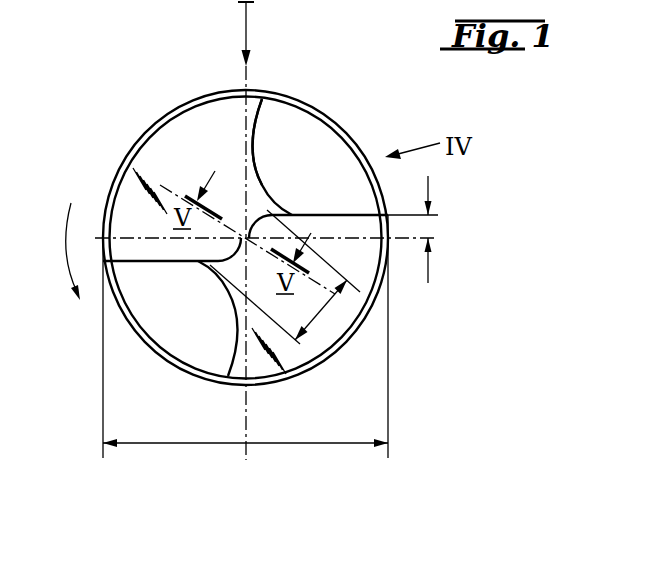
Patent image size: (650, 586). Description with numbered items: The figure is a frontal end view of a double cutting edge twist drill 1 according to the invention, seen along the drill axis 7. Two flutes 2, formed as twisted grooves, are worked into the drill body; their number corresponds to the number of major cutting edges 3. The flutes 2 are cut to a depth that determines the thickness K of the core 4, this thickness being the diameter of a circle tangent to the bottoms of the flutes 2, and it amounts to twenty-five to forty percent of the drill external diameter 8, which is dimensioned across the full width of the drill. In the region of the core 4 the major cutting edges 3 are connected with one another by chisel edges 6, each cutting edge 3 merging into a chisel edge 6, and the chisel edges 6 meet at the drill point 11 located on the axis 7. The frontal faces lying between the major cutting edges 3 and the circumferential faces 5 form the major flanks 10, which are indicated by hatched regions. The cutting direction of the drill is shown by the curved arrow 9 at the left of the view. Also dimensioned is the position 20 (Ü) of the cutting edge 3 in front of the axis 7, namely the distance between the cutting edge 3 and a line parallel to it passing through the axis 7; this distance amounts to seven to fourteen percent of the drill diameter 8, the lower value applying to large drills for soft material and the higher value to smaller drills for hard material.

The twist drill 1 is at (349, 121).
The flutes 2 is at (300, 140).
The major cutting edges 3 is at (318, 215).
The core 4 is at (285, 277).
The circumferential faces 5 is at (145, 143).
The chisel edges 6 is at (233, 258).
The drill axis 7 is at (253, 188).
The drill external diameter 8 is at (245, 442).
The arrow indicating cutting direction 9 is at (67, 247).
The major flanks 10 is at (198, 137).
The drill point 11 is at (258, 142).
The position Ü in front of axis 20 is at (429, 228).